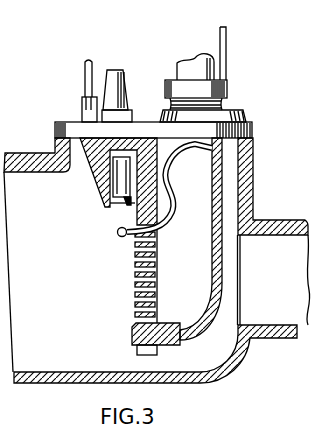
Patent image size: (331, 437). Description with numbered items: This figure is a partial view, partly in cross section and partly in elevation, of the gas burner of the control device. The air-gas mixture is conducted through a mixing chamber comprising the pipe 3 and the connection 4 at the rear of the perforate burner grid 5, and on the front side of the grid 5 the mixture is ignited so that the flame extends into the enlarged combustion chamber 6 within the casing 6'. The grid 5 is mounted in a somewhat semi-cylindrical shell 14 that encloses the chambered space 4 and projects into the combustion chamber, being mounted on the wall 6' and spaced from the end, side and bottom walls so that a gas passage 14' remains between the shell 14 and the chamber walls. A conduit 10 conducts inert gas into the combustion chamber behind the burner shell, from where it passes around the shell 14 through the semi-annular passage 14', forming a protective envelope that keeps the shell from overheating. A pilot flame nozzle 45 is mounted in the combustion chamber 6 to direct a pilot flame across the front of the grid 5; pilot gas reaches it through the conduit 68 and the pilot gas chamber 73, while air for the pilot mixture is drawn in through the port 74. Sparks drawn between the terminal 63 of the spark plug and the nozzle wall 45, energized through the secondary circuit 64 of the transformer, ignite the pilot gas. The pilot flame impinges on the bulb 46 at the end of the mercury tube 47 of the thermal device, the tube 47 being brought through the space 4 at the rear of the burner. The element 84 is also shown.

The pipe 3 is at (176, 72).
The connection 4 is at (193, 249).
The burner grid 5 is at (157, 292).
The combustion chamber 6 is at (150, 278).
The casing 6' is at (273, 186).
The conduit 10 is at (282, 278).
The shell 14 is at (235, 239).
The gas passage 14' is at (262, 254).
The pilot flame nozzle 45 is at (108, 205).
The bulb 46 is at (116, 237).
The tube 47 is at (227, 61).
The terminal 63 is at (120, 209).
The secondary circuit 64 is at (125, 72).
The conduit 68 is at (83, 68).
The pilot gas chamber 73 is at (113, 172).
The port 74 is at (83, 107).
The connection 84 is at (330, 65).